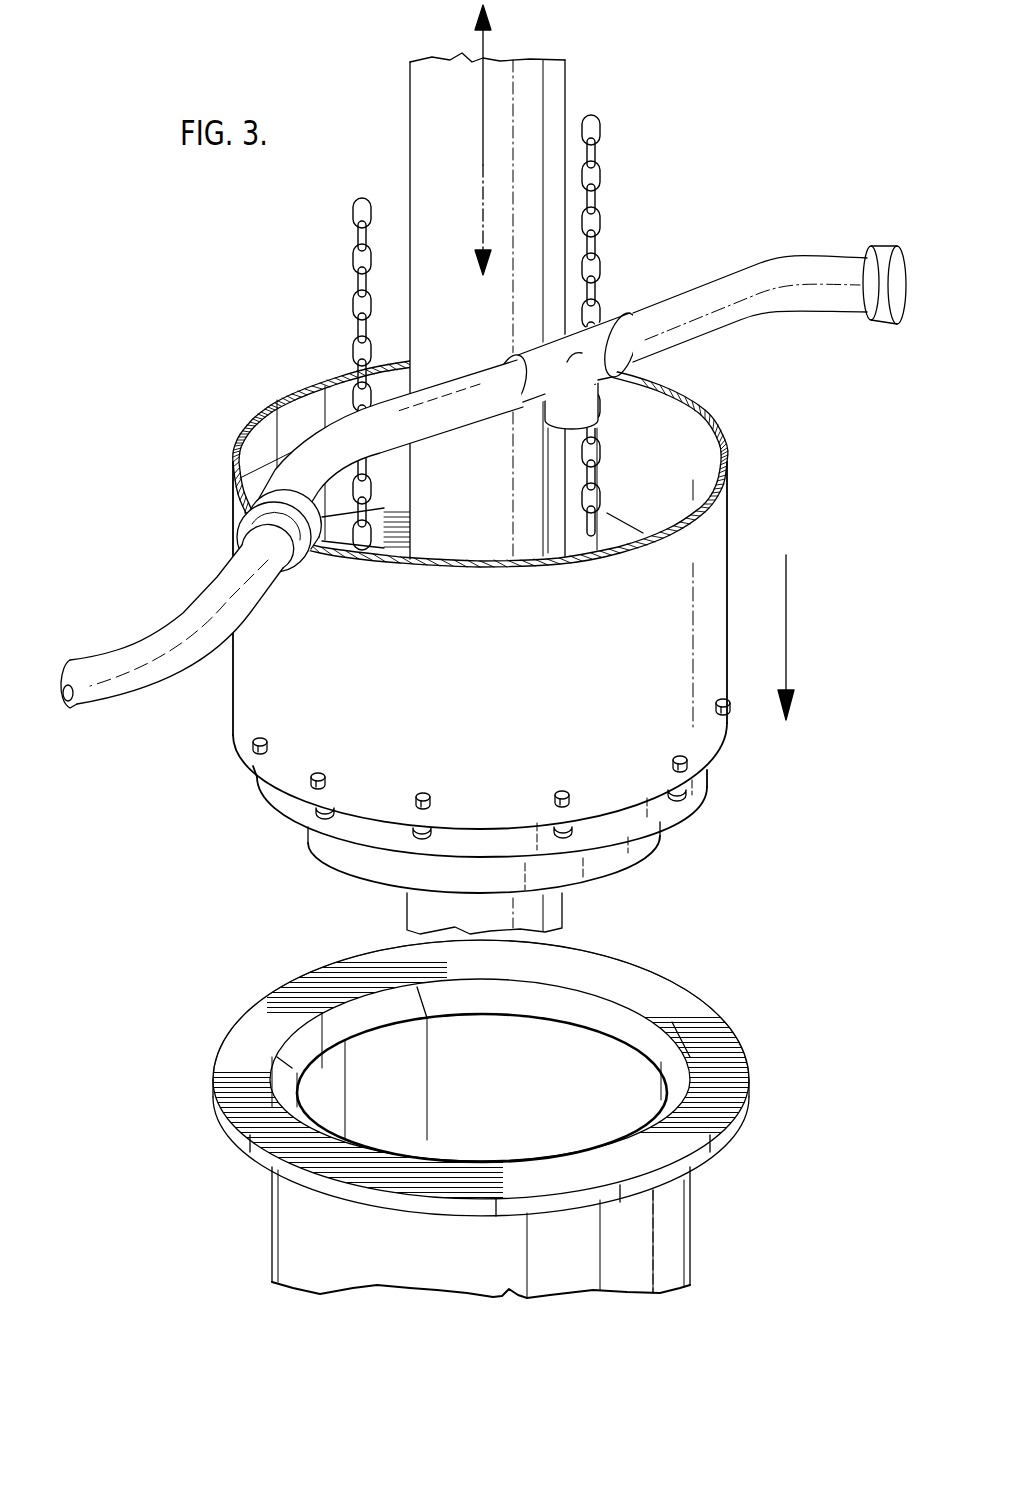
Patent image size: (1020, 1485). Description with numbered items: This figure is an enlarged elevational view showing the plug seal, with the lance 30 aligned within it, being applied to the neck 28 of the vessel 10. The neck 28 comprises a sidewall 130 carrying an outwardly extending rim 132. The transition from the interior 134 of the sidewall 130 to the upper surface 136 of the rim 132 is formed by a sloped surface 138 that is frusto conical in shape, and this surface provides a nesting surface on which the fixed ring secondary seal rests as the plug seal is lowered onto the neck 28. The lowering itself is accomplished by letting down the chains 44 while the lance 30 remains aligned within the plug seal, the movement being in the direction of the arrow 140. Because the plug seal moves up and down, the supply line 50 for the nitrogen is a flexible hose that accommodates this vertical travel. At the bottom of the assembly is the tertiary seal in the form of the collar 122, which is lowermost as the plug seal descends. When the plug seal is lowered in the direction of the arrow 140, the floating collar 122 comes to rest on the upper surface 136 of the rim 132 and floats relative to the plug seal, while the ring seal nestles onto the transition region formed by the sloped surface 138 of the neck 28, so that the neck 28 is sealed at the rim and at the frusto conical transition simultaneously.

The vessel 10 is at (758, 516).
The neck 28 is at (478, 1109).
The lance 30 is at (575, 68).
The chains 44 is at (606, 190).
The supply line 50 is at (150, 652).
The collar 122 is at (278, 797).
The sidewall 130 is at (292, 1228).
The rim 132 is at (461, 1068).
The interior 134 is at (325, 1068).
The upper surface 136 is at (235, 1053).
The sloped surface 138 is at (618, 1012).
The arrow 140 is at (788, 590).